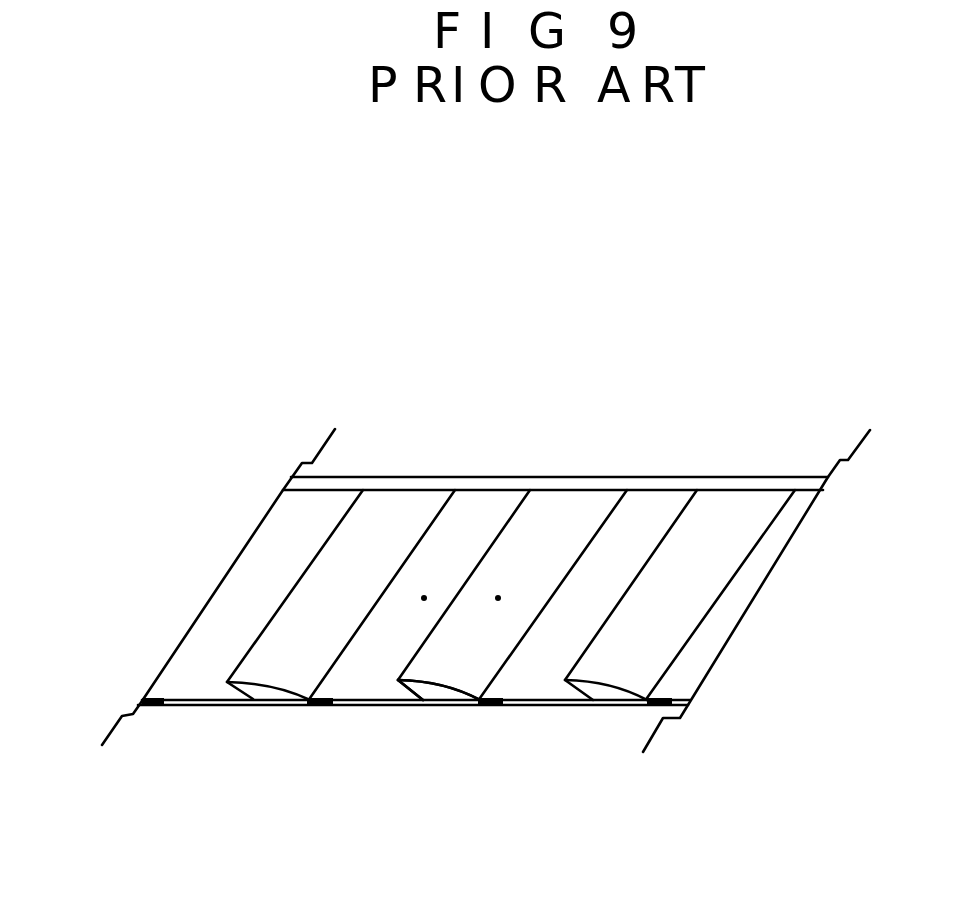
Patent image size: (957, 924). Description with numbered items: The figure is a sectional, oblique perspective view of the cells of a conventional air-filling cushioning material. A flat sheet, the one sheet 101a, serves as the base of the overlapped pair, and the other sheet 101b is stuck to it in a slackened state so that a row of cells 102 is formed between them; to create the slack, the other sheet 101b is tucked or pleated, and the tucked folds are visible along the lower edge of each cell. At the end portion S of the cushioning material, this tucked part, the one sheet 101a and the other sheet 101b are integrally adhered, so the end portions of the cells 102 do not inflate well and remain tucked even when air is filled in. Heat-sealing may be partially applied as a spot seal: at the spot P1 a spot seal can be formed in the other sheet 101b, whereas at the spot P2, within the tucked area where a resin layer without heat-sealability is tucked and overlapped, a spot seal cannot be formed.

The end portion S is at (737, 474).
The one sheet 101a is at (375, 706).
The other sheet 101b is at (437, 682).
The cells 102 is at (316, 621).
The spot P1 is at (424, 597).
The spot P2 is at (498, 597).